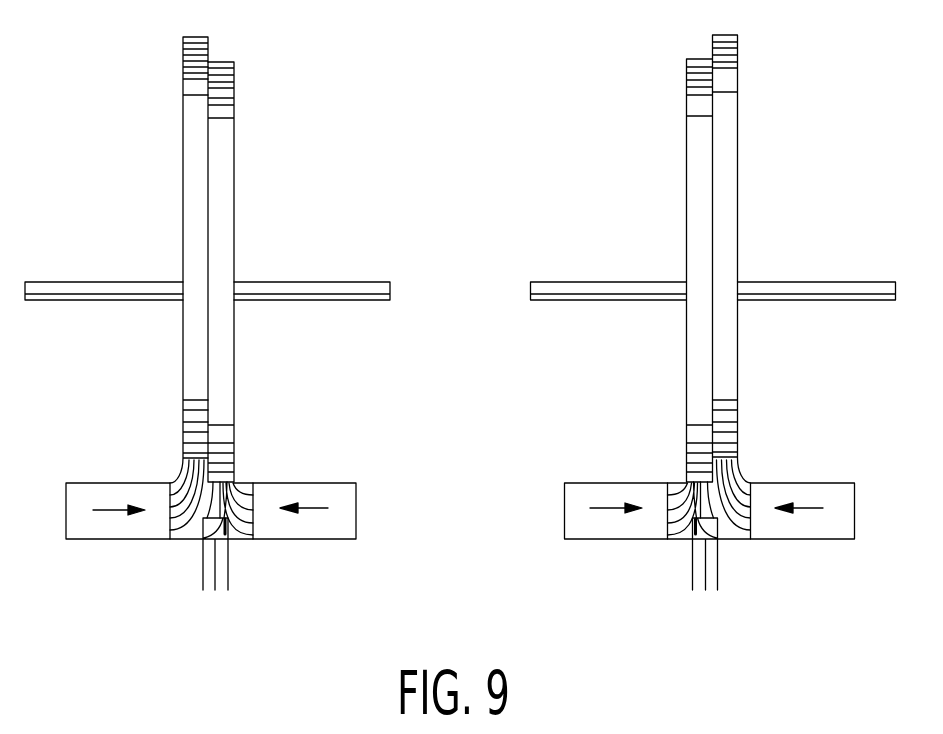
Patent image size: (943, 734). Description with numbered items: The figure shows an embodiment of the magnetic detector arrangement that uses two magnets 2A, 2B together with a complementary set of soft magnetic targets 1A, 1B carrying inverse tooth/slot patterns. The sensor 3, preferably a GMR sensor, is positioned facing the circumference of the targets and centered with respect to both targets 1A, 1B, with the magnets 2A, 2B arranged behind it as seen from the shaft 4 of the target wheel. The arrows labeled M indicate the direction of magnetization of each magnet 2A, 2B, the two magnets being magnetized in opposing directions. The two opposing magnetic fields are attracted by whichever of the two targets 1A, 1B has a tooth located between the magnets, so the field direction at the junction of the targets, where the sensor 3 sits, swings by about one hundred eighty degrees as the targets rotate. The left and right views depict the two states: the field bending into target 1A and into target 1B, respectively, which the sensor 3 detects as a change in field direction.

The first target 1A is at (192, 72).
The second target 1B is at (220, 98).
The first magnet 2A is at (86, 493).
The second magnet 2B is at (332, 491).
The sensor 3 is at (232, 538).
The shaft 4 is at (75, 287).
The direction of magnetization M is at (112, 511).